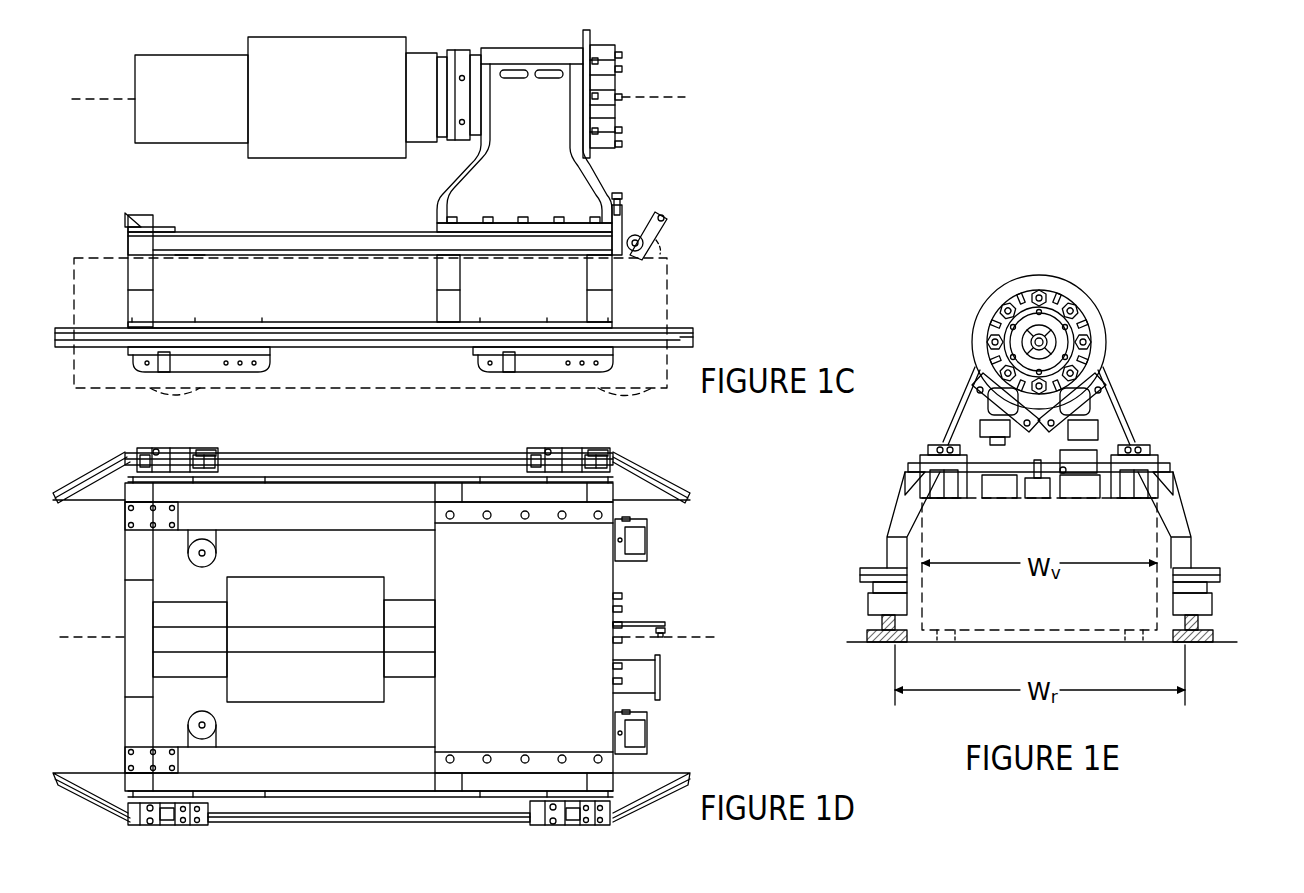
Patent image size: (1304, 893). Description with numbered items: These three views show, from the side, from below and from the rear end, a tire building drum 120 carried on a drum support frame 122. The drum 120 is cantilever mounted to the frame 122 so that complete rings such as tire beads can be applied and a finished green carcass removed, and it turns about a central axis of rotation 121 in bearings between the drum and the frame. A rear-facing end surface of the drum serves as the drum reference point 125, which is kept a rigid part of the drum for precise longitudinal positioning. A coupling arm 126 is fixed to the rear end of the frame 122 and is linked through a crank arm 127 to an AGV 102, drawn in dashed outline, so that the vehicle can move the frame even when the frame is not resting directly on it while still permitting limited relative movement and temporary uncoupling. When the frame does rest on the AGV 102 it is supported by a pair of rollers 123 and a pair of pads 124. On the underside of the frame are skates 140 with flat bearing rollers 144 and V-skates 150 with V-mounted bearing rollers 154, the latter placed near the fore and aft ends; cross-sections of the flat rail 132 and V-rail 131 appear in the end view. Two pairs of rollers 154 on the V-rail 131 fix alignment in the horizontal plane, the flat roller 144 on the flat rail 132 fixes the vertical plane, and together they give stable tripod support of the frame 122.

In FIG. 1C, the AGV 102 is at (100, 258).
In FIG. 1C, the tire building drum 120 is at (157, 50).
In FIG. 1D, the tire building drum 120 is at (410, 596).
In FIG. 1C, the central axis of rotation 121 is at (682, 95).
In FIG. 1D, the central axis of rotation 121 is at (686, 640).
In FIG. 1E, the central axis of rotation 121 is at (1032, 340).
In FIG. 1C, the drum support frame 122 is at (607, 172).
In FIG. 1D, the drum support frame 122 is at (538, 594).
In FIG. 1E, the drum support frame 122 is at (959, 389).
In FIG. 1C, the rollers 123 is at (641, 253).
In FIG. 1D, the rollers 123 is at (648, 540).
In FIG. 1E, the rollers 123 is at (943, 490).
In FIG. 1C, the pads 124 is at (193, 260).
In FIG. 1D, the pads 124 is at (216, 547).
In FIG. 1C, the drum reference point 125 is at (617, 82).
In FIG. 1E, the drum reference point 125 is at (1080, 315).
In FIG. 1C, the coupling arm 126 is at (663, 218).
In FIG. 1D, the coupling arm 126 is at (674, 624).
In FIG. 1E, the coupling arm 126 is at (1037, 498).
In FIG. 1C, the crank arm 127 is at (668, 250).
In FIG. 1E, the V-rail 131 is at (1216, 629).
In FIG. 1E, the flat rail 132 is at (856, 628).
In FIG. 1C, the skates 140 is at (268, 366).
In FIG. 1D, the skates 140 is at (172, 447).
In FIG. 1E, the skates 140 is at (884, 603).
In FIG. 1D, the flat bearing roller 144 is at (194, 449).
In FIG. 1D, the V-skates 150 is at (128, 822).
In FIG. 1E, the V-skates 150 is at (1196, 603).
In FIG. 1D, the V-mounted bearing rollers 154 is at (189, 831).